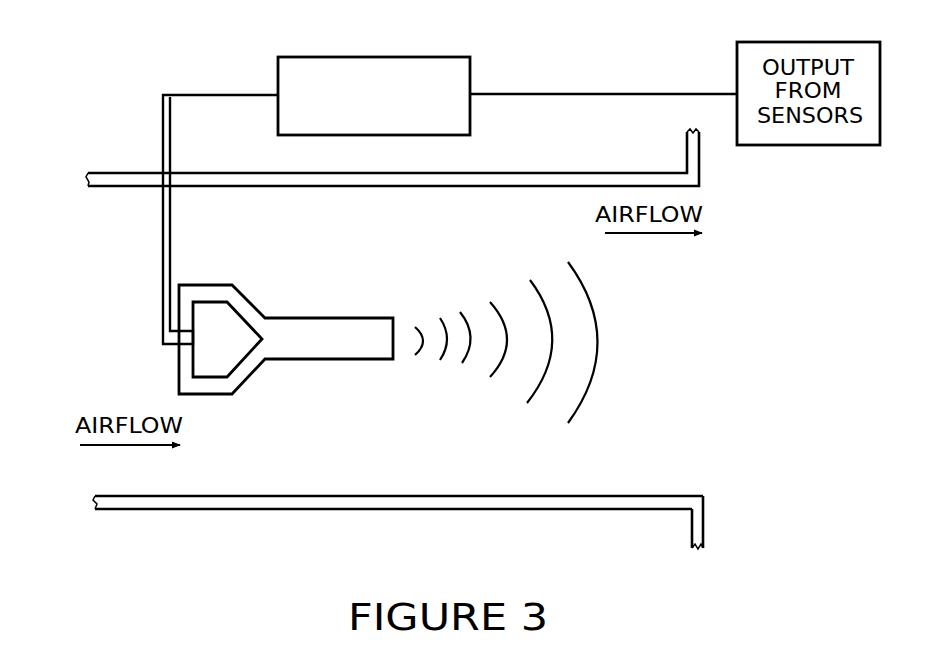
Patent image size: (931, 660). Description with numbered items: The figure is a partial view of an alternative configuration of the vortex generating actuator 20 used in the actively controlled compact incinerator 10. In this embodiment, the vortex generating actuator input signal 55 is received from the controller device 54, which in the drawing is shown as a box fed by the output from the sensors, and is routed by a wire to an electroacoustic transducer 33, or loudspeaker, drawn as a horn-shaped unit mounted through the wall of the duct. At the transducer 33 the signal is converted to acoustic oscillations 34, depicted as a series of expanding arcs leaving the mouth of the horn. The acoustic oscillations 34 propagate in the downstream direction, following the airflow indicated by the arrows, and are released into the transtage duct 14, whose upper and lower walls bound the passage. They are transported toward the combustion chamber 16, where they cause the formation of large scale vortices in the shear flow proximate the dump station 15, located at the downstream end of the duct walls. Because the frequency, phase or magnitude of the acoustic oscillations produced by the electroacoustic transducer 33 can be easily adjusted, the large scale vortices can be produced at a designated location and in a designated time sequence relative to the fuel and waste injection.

The actively controlled compact incinerator 10 is at (655, 518).
The transtage duct 14 is at (495, 222).
The dump station 15 is at (693, 493).
The combustion chamber 16 is at (782, 352).
The vortex generating actuator 20 is at (133, 311).
The electroacoustic transducer 33 is at (318, 317).
The acoustic oscillations 34 is at (463, 364).
The controller device 54 is at (470, 125).
The vortex generating actuator input signal 55 is at (160, 143).